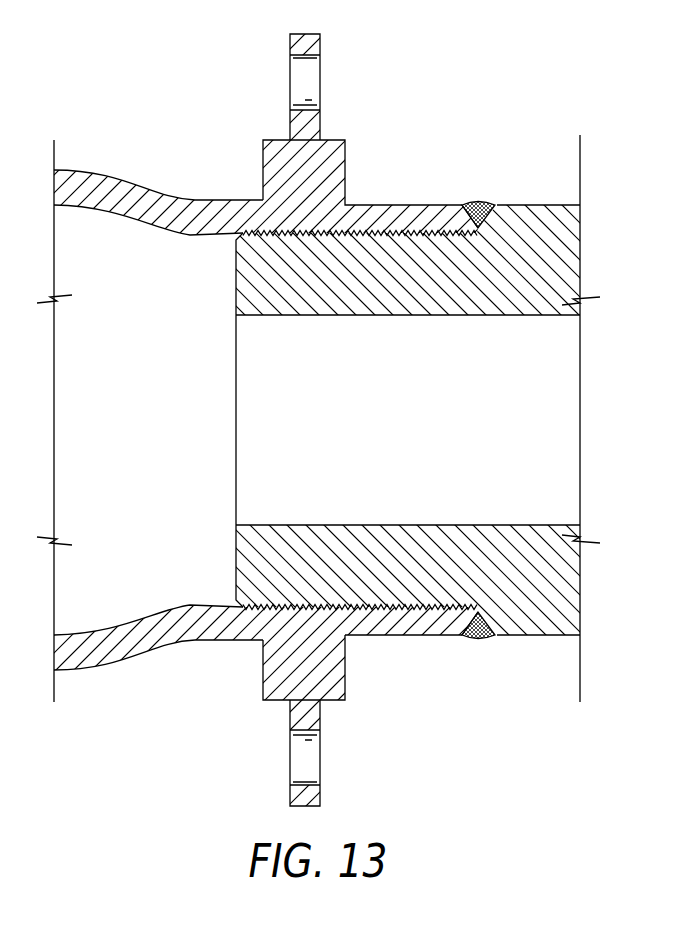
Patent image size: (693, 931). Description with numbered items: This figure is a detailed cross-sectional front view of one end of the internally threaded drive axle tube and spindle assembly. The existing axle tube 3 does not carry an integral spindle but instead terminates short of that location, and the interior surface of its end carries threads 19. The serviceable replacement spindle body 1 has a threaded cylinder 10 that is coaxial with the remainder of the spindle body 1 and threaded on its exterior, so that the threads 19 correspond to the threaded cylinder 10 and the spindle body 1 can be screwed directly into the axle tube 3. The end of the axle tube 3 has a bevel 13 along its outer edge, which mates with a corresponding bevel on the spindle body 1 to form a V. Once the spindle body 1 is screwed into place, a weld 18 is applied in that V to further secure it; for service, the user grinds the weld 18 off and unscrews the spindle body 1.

The spindle body 1 is at (557, 243).
The axle tube 3 is at (135, 200).
The threaded cylinder 10 is at (232, 278).
The bevel 13 is at (470, 221).
The weld 18 is at (480, 200).
The threads 19 is at (390, 233).